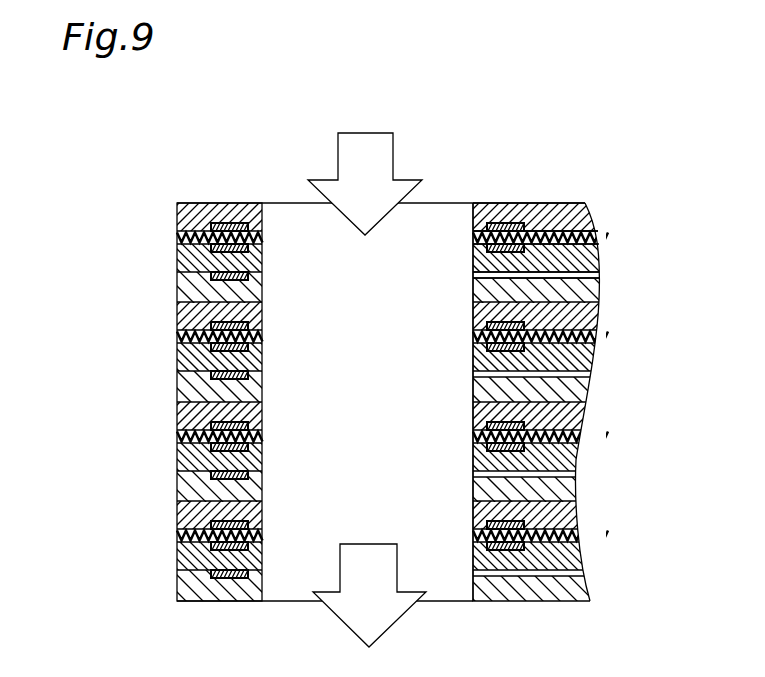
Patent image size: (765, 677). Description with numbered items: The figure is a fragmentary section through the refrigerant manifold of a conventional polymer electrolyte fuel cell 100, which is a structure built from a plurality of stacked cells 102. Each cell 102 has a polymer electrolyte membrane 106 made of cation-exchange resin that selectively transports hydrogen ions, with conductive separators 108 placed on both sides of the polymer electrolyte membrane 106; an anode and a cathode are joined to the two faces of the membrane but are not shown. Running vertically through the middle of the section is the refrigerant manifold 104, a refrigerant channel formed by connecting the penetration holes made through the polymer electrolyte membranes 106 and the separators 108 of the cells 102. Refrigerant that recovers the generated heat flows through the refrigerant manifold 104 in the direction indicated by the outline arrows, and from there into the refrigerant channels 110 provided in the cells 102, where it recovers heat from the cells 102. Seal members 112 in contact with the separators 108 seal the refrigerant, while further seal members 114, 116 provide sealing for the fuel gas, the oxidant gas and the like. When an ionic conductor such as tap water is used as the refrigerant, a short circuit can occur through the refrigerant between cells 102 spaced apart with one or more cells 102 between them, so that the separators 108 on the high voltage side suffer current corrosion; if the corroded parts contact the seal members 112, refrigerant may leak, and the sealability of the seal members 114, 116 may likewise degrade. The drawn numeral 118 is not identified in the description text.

The polymer electrolyte fuel cell 100 is at (382, 374).
The cell 102 is at (609, 200).
The refrigerant manifold 104 is at (390, 418).
The polymer electrolyte membrane 106 is at (473, 235).
The separator 108 is at (488, 201).
The refrigerant channel 110 is at (475, 273).
The seal member 112 is at (255, 278).
The seal member 114 is at (517, 222).
The seal member 116 is at (542, 226).
The internal electrode 118 is at (255, 477).